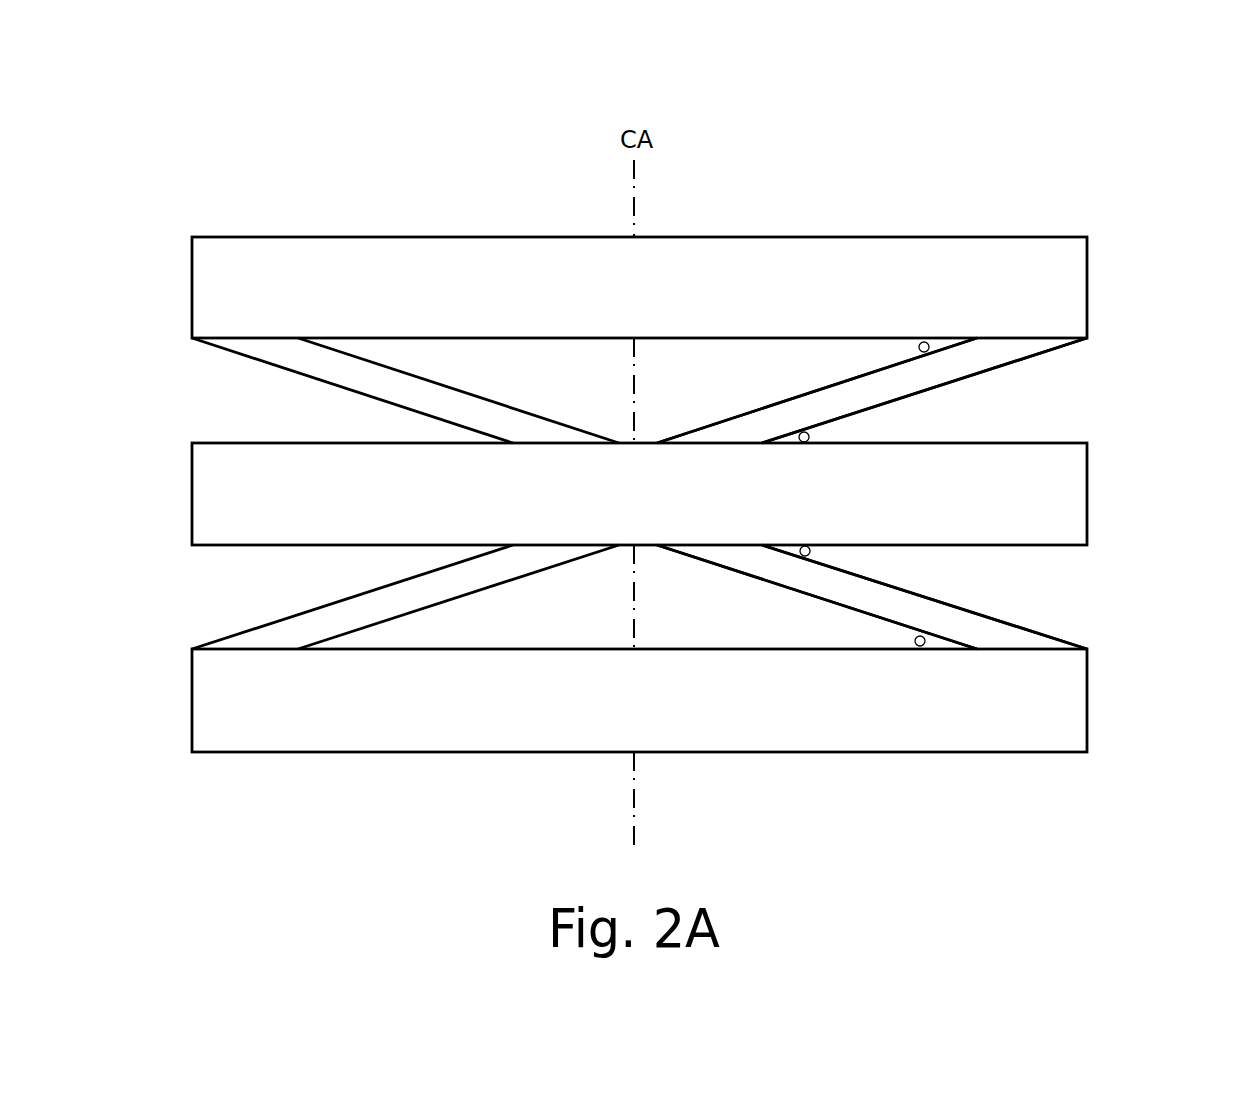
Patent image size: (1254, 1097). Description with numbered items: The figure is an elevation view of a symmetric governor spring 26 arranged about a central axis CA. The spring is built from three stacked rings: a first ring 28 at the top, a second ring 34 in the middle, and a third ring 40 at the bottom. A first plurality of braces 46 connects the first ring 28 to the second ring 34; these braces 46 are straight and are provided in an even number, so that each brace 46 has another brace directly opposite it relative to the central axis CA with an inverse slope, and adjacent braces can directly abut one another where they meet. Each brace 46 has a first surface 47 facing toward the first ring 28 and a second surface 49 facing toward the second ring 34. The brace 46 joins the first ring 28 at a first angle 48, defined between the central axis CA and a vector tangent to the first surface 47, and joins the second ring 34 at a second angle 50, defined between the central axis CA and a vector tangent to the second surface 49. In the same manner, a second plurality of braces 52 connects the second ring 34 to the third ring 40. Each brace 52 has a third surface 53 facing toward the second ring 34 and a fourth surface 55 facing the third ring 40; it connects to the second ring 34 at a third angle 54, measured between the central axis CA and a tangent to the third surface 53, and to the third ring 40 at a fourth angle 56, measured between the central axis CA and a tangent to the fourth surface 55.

The symmetric governor spring 26 is at (1092, 121).
The first ring 28 is at (1087, 274).
The second ring 34 is at (1087, 490).
The third ring 40 is at (1087, 703).
The first plurality of braces 46 is at (1020, 362).
The first surface 47 is at (853, 377).
The first angle 48 is at (928, 347).
The second surface 49 is at (882, 407).
The second angle 50 is at (800, 433).
The second plurality of braces 52 is at (1020, 625).
The third surface 53 is at (897, 587).
The third angle 54 is at (800, 550).
The fourth surface 55 is at (872, 615).
The fourth angle 56 is at (928, 643).